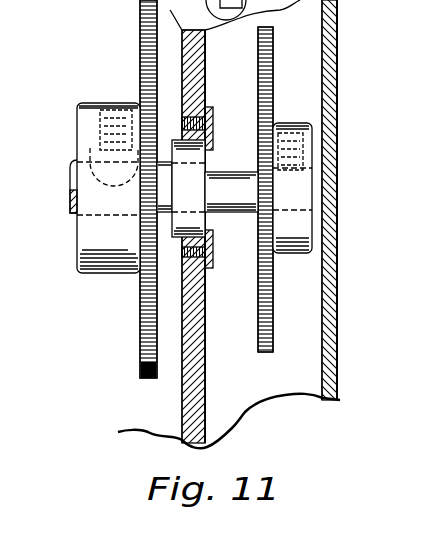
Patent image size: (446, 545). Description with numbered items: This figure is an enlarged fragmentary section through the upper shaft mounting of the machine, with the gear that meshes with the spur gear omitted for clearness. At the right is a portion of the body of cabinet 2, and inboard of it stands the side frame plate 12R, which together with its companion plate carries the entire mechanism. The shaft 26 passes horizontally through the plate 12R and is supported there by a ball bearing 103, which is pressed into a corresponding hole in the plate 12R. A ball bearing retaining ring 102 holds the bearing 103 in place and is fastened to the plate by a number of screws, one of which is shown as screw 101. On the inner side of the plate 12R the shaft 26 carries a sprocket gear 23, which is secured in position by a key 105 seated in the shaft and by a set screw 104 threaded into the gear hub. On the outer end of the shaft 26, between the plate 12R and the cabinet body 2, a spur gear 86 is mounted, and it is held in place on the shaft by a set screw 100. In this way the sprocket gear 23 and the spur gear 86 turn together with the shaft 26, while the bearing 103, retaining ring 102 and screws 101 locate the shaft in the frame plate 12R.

The body of cabinet 2 is at (338, 62).
The side frame plate 12R is at (205, 80).
The sprocket gear 23 is at (148, 381).
The shaft 26 is at (243, 212).
The spur gear 86 is at (274, 100).
The set screw 100 is at (300, 152).
The screw 101 is at (204, 250).
The ball bearing retaining ring 102 is at (209, 268).
The ball bearing 103 is at (213, 160).
The set screw 104 is at (110, 104).
The key 105 is at (91, 140).